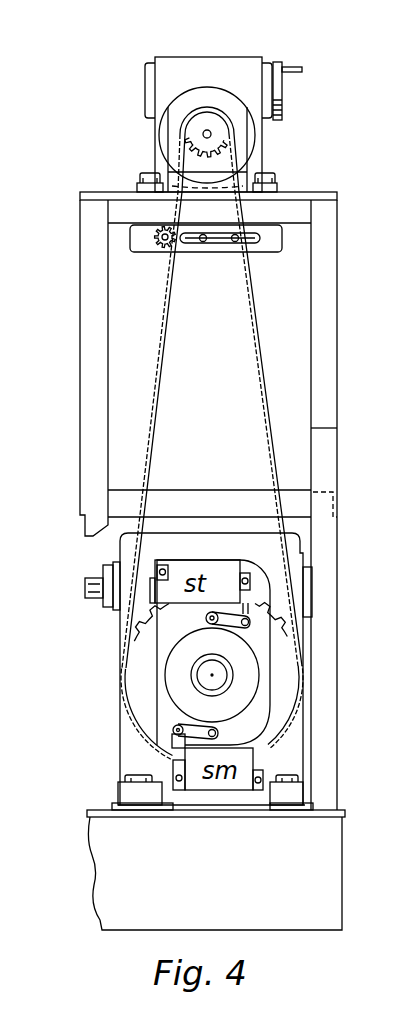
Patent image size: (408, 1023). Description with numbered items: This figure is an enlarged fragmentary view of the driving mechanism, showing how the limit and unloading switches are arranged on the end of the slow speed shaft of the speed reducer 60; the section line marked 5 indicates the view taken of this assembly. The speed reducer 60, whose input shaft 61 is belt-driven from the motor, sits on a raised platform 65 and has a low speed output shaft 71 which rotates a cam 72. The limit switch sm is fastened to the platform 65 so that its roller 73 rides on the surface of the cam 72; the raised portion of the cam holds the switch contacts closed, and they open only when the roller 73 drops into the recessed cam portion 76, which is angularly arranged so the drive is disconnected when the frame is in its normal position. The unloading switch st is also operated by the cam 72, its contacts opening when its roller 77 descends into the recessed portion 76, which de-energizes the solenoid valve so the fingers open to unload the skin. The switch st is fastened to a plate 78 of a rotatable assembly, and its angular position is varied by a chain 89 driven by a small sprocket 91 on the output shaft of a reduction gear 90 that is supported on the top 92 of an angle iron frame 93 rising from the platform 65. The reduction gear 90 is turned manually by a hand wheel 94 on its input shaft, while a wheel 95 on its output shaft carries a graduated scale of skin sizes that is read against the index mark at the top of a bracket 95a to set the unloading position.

The section line of FIG. 5 is at (193, 545).
The speed reducer 60 is at (120, 747).
The input shaft 61 is at (88, 580).
The platform 65 is at (216, 870).
The low speed output shaft 71 is at (205, 676).
The cam 72 is at (206, 640).
The roller 73 is at (220, 733).
The recessed cam portion 76 is at (254, 709).
The roller 77 is at (206, 618).
The plate 78 is at (160, 666).
The chain 89 is at (257, 367).
The reduction gear 90 is at (195, 55).
The small sprocket 91 is at (198, 130).
The top 92 is at (297, 195).
The angle iron frame 93 is at (340, 318).
The hand wheel 94 is at (283, 108).
The wheel 95 is at (256, 138).
The bracket 95a is at (215, 97).